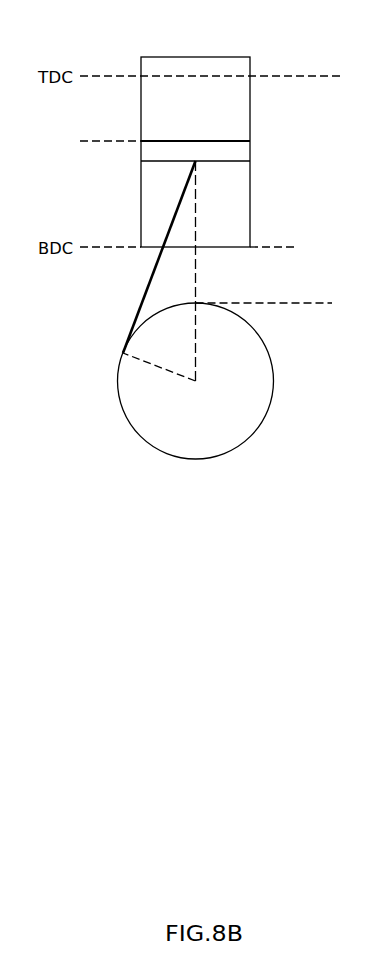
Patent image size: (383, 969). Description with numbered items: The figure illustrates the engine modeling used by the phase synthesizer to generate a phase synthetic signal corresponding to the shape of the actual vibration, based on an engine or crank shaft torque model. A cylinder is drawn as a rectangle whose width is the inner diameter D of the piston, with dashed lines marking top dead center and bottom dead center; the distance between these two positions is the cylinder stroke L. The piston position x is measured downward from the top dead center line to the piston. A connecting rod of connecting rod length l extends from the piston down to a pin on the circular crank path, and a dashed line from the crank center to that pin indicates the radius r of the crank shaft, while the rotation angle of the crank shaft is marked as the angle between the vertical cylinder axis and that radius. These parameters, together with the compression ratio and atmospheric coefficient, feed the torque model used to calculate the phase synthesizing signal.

The inner diameter of a piston D is at (250, 40).
The piston position x is at (103, 141).
The cylinder stroke L is at (288, 76).
The connecting rod length l is at (324, 76).
The radius of the crank shaft r is at (159, 372).